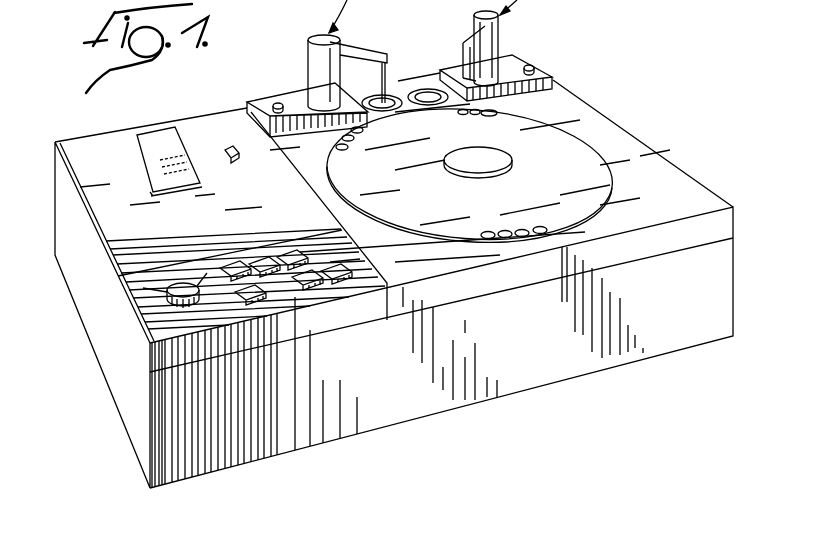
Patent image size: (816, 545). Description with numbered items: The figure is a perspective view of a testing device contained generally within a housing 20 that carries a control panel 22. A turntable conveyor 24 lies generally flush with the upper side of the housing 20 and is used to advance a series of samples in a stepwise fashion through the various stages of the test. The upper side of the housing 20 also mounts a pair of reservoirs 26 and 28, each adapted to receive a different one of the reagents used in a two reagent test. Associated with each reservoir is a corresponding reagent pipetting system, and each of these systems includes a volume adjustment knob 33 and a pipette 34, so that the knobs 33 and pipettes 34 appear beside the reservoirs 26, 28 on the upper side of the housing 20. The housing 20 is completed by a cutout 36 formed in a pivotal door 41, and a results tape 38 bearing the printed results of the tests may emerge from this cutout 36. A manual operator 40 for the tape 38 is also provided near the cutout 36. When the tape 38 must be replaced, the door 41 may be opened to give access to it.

The housing 20 is at (747, 266).
The control panel 22 is at (240, 318).
The turntable conveyor 24 is at (572, 151).
The reservoir 26 is at (388, 95).
The reservoir 28 is at (430, 88).
The volume adjustment knob 33 is at (278, 103).
The pipette 34 is at (466, 55).
The cutout 36 is at (197, 190).
The tape 38 is at (172, 143).
The manual operator 40 is at (240, 158).
The pivotal door 41 is at (110, 224).